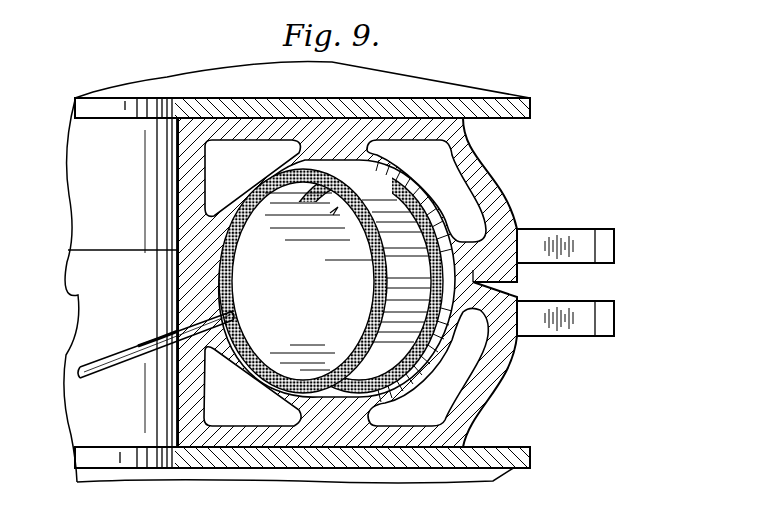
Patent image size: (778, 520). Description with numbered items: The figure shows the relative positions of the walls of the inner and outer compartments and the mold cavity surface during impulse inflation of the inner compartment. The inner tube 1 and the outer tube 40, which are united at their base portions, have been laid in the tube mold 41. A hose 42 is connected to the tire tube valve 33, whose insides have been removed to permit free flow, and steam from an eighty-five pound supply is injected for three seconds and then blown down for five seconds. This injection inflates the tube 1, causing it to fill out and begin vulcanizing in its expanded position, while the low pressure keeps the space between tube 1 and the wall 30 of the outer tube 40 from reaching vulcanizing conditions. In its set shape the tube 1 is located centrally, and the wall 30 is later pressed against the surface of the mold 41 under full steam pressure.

The tube 1 is at (362, 348).
The strip of rubber 30 is at (436, 309).
The tire tube valve 33 is at (210, 348).
The outer tube 40 is at (486, 407).
The tube mold 41 is at (417, 85).
The hose 42 is at (122, 343).